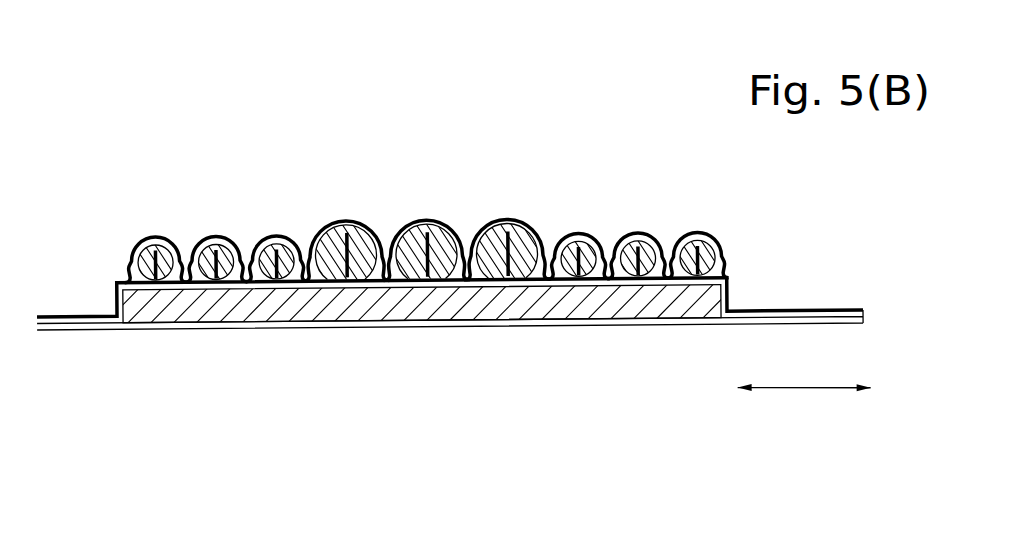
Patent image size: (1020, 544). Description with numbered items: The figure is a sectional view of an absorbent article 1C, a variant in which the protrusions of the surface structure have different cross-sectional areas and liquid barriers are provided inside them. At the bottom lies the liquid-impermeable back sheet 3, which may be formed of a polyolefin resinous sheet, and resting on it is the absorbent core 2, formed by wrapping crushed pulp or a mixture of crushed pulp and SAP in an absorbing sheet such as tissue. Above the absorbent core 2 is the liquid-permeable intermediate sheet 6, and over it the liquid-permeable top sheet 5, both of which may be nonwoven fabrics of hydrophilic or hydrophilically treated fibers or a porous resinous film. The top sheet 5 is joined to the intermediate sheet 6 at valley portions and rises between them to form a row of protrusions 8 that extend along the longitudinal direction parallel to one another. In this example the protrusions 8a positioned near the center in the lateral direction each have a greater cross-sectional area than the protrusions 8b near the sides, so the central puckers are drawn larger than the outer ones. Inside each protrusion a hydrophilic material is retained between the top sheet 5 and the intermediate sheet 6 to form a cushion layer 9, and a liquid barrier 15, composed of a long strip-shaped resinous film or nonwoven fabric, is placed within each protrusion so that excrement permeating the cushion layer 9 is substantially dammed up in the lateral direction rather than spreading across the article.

The absorbent article 1C is at (157, 336).
The absorbent core 2 is at (600, 306).
The back sheet 3 is at (445, 325).
The top sheet 5 is at (728, 274).
The intermediate sheet 6 is at (731, 296).
The protrusions 8 is at (654, 108).
The protrusions near the center 8a is at (476, 212).
The protrusions near the sides 8b is at (264, 217).
The cushion layer 9 is at (327, 267).
The liquid barrier 15 is at (572, 276).